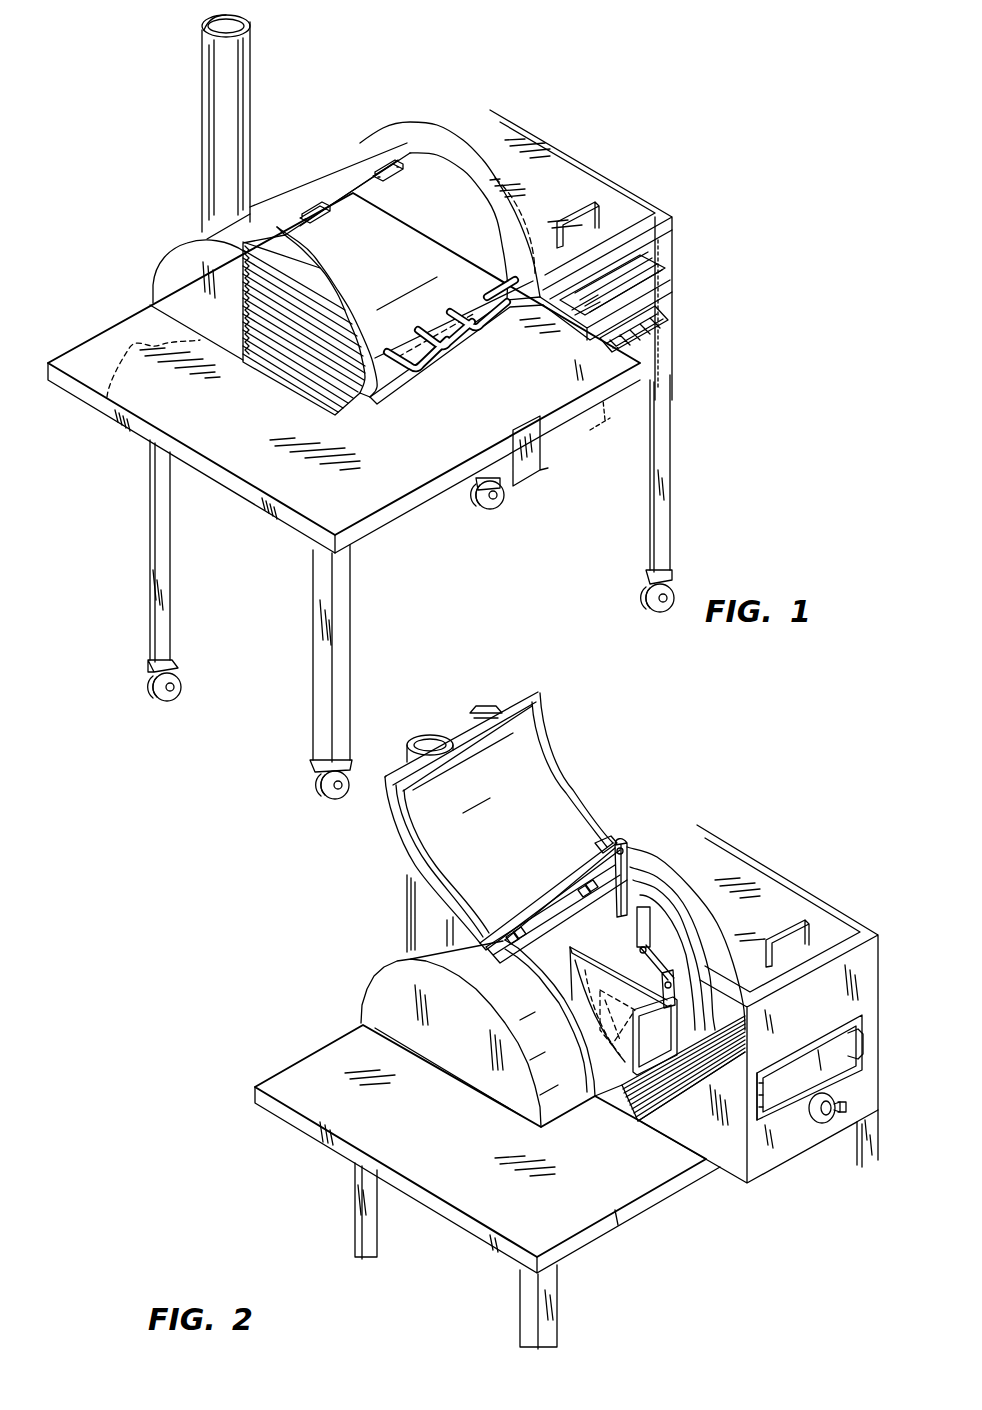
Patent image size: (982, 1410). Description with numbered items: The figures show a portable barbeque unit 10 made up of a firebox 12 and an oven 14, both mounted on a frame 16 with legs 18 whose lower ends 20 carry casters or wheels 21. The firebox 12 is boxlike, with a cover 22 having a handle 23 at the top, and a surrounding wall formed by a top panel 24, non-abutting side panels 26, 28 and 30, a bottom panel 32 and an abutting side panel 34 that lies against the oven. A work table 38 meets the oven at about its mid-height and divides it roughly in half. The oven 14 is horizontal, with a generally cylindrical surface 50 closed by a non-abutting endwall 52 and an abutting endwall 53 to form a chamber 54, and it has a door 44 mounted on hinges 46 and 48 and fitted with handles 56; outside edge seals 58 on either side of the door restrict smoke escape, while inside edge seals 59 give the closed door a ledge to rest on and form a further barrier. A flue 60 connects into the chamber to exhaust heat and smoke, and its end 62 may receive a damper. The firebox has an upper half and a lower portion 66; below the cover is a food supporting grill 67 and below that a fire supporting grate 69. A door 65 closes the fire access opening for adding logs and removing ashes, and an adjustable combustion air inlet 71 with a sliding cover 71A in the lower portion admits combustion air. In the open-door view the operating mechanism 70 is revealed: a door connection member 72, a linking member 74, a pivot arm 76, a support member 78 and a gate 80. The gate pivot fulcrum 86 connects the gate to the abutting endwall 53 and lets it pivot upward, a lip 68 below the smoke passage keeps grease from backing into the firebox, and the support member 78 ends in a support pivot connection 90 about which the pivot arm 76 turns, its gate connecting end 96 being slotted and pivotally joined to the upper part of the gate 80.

In FIG. 1, the portable barbeque unit 10 is at (442, 86).
In FIG. 1, the firebox 12 is at (630, 255).
In FIG. 2, the firebox 12 is at (763, 1007).
In FIG. 1, the oven 14 is at (340, 158).
In FIG. 2, the oven 14 is at (403, 953).
In FIG. 1, the frame 16 is at (405, 520).
In FIG. 1, the legs 18 is at (170, 603).
In FIG. 2, the legs 18 is at (355, 1213).
In FIG. 1, the lower end 20 is at (148, 667).
In FIG. 1, the casters or wheels 21 is at (182, 698).
In FIG. 1, the cover 22 is at (558, 170).
In FIG. 2, the cover 22 is at (735, 874).
In FIG. 1, the handle 23 is at (597, 205).
In FIG. 2, the handle 23 is at (790, 926).
In FIG. 1, the top panel 24 is at (655, 213).
In FIG. 1, the non-abutting side panel 26 is at (550, 302).
In FIG. 1, the non-abutting side panel 28 is at (668, 248).
In FIG. 1, the non-abutting side panel 30 is at (435, 128).
In FIG. 1, the bottom panel 32 is at (603, 438).
In FIG. 1, the abutting side panel 34 is at (514, 470).
In FIG. 2, the work table 38 is at (312, 1082).
In FIG. 1, the oven door 44 is at (396, 246).
In FIG. 2, the oven door 44 is at (545, 712).
In FIG. 1, the hinge 46 is at (304, 210).
In FIG. 1, the hinge 48 is at (385, 166).
In FIG. 1, the cylindrical surface 50 is at (222, 237).
In FIG. 2, the cylindrical surface 50 is at (467, 970).
In FIG. 1, the non-abutting endwall 52 is at (240, 356).
In FIG. 2, the non-abutting endwall 52 is at (440, 1060).
In FIG. 1, the abutting endwall 53 is at (532, 202).
In FIG. 2, the chamber 54 is at (565, 961).
In FIG. 1, the handles 56 is at (470, 340).
In FIG. 1, the outside edge seals 58 is at (343, 273).
In FIG. 2, the outside edge seals 58 is at (395, 850).
In FIG. 2, the inside edge seals 59 is at (513, 960).
In FIG. 1, the flue 60 is at (255, 100).
In FIG. 2, the flue 60 is at (408, 918).
In FIG. 1, the flue end 62 is at (252, 22).
In FIG. 2, the door 65 is at (845, 1040).
In FIG. 1, the lower portion of the firebox 66 is at (542, 458).
In FIG. 1, the food supporting grill 67 is at (667, 276).
In FIG. 2, the lip 68 is at (594, 1012).
In FIG. 1, the fire supporting grate 69 is at (668, 338).
In FIG. 2, the operating mechanism 70 is at (600, 930).
In FIG. 2, the adjustable combustion air inlet 71 is at (812, 1124).
In FIG. 2, the sliding cover 71A is at (834, 1098).
In FIG. 2, the door connection member 72 is at (605, 840).
In FIG. 2, the linking member 74 is at (640, 846).
In FIG. 2, the pivot arm 76 is at (678, 922).
In FIG. 2, the support member 78 is at (629, 1068).
In FIG. 2, the gate 80 is at (582, 966).
In FIG. 2, the gate pivot fulcrum 86 is at (742, 1034).
In FIG. 2, the support pivot connection 90 is at (680, 973).
In FIG. 2, the gate connecting end 96 is at (684, 1046).